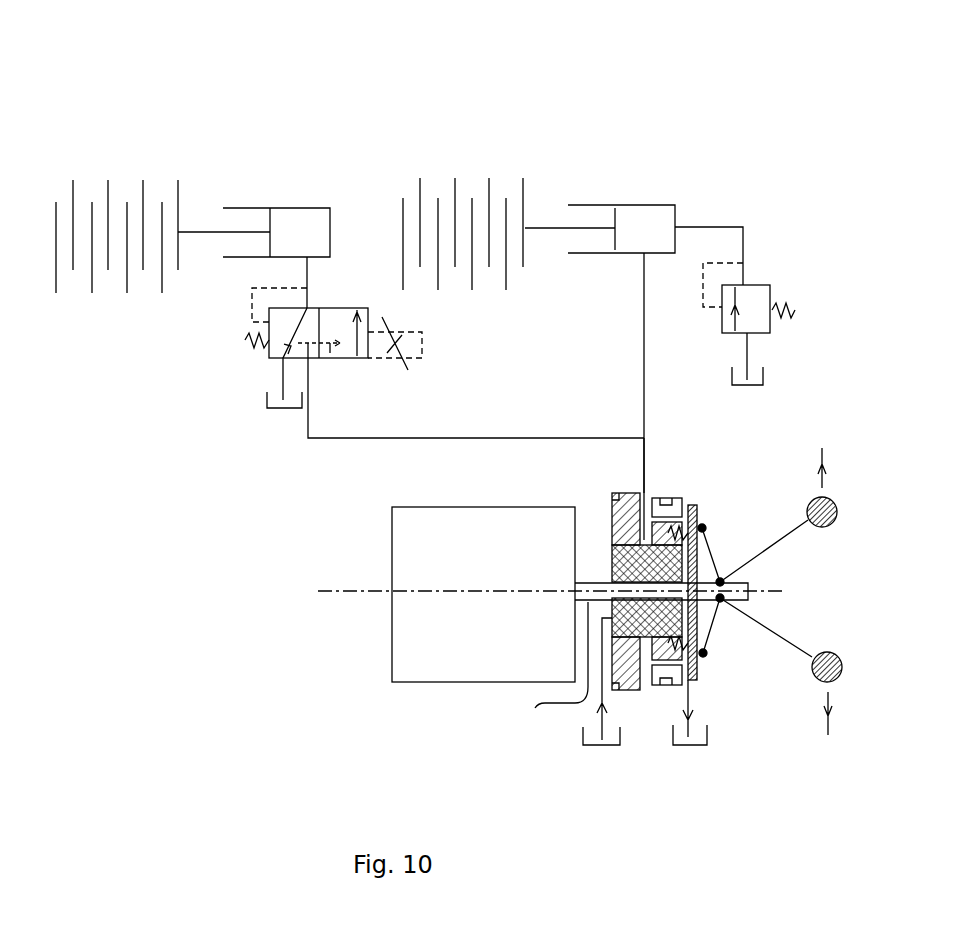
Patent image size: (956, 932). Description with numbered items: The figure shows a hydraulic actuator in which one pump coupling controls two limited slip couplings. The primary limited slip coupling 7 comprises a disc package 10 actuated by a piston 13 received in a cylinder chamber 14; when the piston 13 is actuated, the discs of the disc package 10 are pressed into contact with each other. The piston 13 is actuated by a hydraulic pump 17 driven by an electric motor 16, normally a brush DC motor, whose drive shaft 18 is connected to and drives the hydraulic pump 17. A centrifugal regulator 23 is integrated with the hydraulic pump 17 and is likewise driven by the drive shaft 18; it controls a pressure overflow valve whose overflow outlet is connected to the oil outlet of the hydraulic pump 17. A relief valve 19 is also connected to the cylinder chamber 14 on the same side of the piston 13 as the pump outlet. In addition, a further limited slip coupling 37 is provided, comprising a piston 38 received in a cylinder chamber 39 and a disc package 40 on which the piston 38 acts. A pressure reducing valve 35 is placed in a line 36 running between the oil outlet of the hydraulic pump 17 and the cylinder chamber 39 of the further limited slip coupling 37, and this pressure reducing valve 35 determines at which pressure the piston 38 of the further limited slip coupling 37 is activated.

The limited slip coupling 7 is at (550, 118).
The clutch plate pack 10 is at (453, 187).
The piston 13 is at (613, 218).
The cylinder chamber 14 is at (660, 213).
The electric motor 16 is at (418, 665).
The hydraulic pump 17 is at (613, 553).
The drive shaft 18 is at (544, 669).
The relief valve 19 is at (760, 295).
The centrifugal regulator 23 is at (767, 697).
The pressure reducing valve 35 is at (342, 352).
The line 36 is at (453, 438).
The further limited slip coupling 37 is at (211, 118).
The piston 38 is at (270, 220).
The cylinder chamber 39 is at (300, 218).
The disc package 40 is at (117, 205).